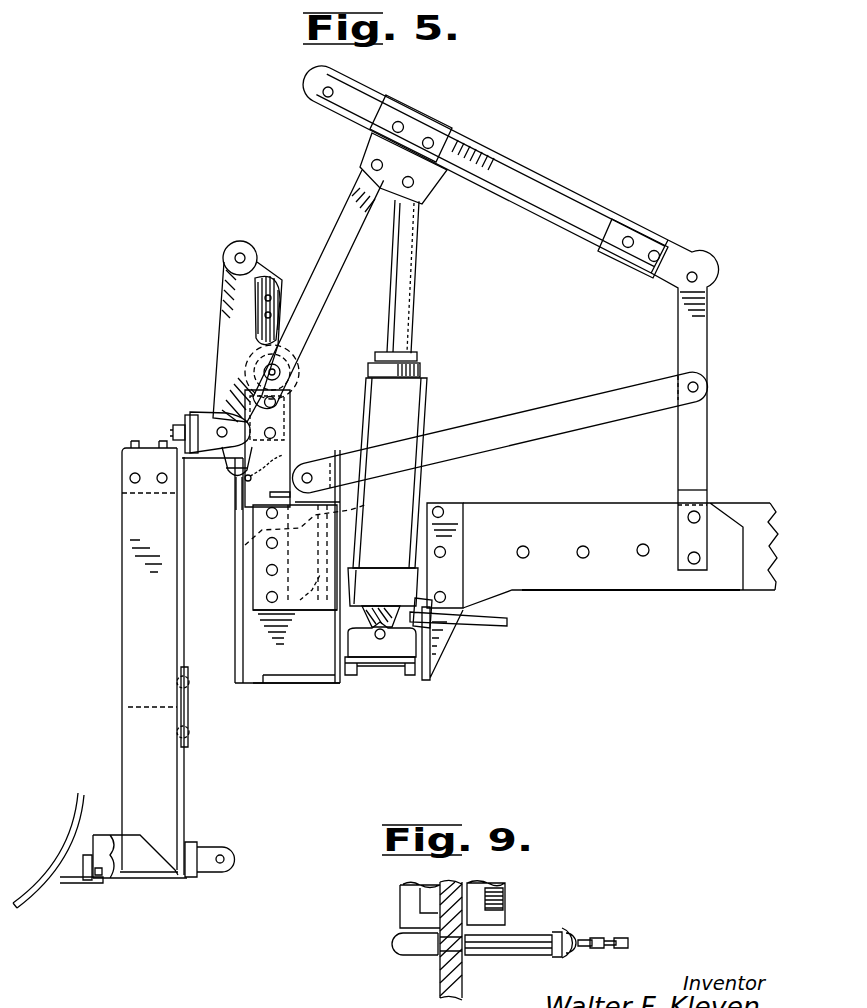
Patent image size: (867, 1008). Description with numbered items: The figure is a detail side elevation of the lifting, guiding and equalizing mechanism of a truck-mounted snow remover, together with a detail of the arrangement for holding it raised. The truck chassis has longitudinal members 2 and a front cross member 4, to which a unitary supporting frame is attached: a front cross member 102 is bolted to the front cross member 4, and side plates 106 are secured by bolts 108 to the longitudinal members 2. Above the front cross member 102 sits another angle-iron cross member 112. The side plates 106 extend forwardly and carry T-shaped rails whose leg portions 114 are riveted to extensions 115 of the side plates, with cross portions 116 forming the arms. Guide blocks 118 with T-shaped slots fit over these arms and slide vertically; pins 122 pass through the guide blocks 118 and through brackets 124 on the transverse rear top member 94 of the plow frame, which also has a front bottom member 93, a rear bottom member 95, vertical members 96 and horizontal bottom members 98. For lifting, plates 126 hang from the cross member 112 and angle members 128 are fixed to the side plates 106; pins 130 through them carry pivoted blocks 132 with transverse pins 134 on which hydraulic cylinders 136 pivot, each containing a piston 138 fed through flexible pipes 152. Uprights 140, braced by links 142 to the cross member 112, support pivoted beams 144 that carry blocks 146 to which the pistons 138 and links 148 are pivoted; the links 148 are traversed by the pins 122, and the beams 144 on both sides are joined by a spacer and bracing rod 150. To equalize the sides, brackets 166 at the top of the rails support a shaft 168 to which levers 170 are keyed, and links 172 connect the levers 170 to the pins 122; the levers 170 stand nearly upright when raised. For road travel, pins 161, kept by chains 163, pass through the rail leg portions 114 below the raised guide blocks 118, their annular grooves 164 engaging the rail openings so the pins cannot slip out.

In FIG. 5, the longitudinal members 2 is at (759, 594).
In FIG. 5, the front cross member 4 is at (310, 615).
In FIG. 5, the transverse front bottom member 93 is at (90, 885).
In FIG. 5, the transverse rear top member 94 is at (181, 645).
In FIG. 5, the transverse rear bottom member 95 is at (186, 878).
In FIG. 5, the vertical members 96 is at (128, 672).
In FIG. 5, the horizontal bottom members 98 is at (141, 864).
In FIG. 5, the front cross member 102 is at (256, 542).
In FIG. 5, the side plates 106 is at (678, 594).
In FIG. 5, the bolts 108 is at (528, 559).
In FIG. 5, the cross member 112 is at (302, 448).
In FIG. 5, the leg portions 114 is at (262, 577).
In FIG. 9, the leg portions 114 is at (462, 878).
In FIG. 5, the extensions 115 is at (262, 604).
In FIG. 5, the cross portions 116 is at (237, 655).
In FIG. 5, the guide blocks 118 is at (224, 462).
In FIG. 9, the guide blocks 118 is at (508, 899).
In FIG. 5, the pins 122 is at (214, 428).
In FIG. 5, the brackets 124 is at (190, 412).
In FIG. 5, the plates 126 is at (332, 678).
In FIG. 5, the angle members 128 is at (468, 510).
In FIG. 5, the pins 130 is at (432, 668).
In FIG. 5, the blocks 132 is at (396, 667).
In FIG. 5, the transverse pins 134 is at (375, 660).
In FIG. 5, the hydraulic cylinders 136 is at (417, 408).
In FIG. 5, the pistons 138 is at (404, 282).
In FIG. 5, the uprights 140 is at (703, 434).
In FIG. 5, the links 142 is at (616, 418).
In FIG. 5, the beams 144 is at (576, 190).
In FIG. 5, the blocks 146 is at (370, 156).
In FIG. 5, the links 148 is at (344, 247).
In FIG. 5, the spacer and bracing rod 150 is at (322, 91).
In FIG. 5, the flexible pipes 152 is at (484, 632).
In FIG. 5, the pins 161 is at (236, 498).
In FIG. 9, the pins 161 is at (522, 945).
In FIG. 5, the chains 163 is at (283, 455).
In FIG. 9, the chains 163 is at (602, 950).
In FIG. 9, the annular grooves 164 is at (447, 948).
In FIG. 5, the brackets 166 is at (288, 375).
In FIG. 5, the shaft 168 is at (278, 374).
In FIG. 5, the levers 170 is at (275, 278).
In FIG. 5, the links 172 is at (228, 306).